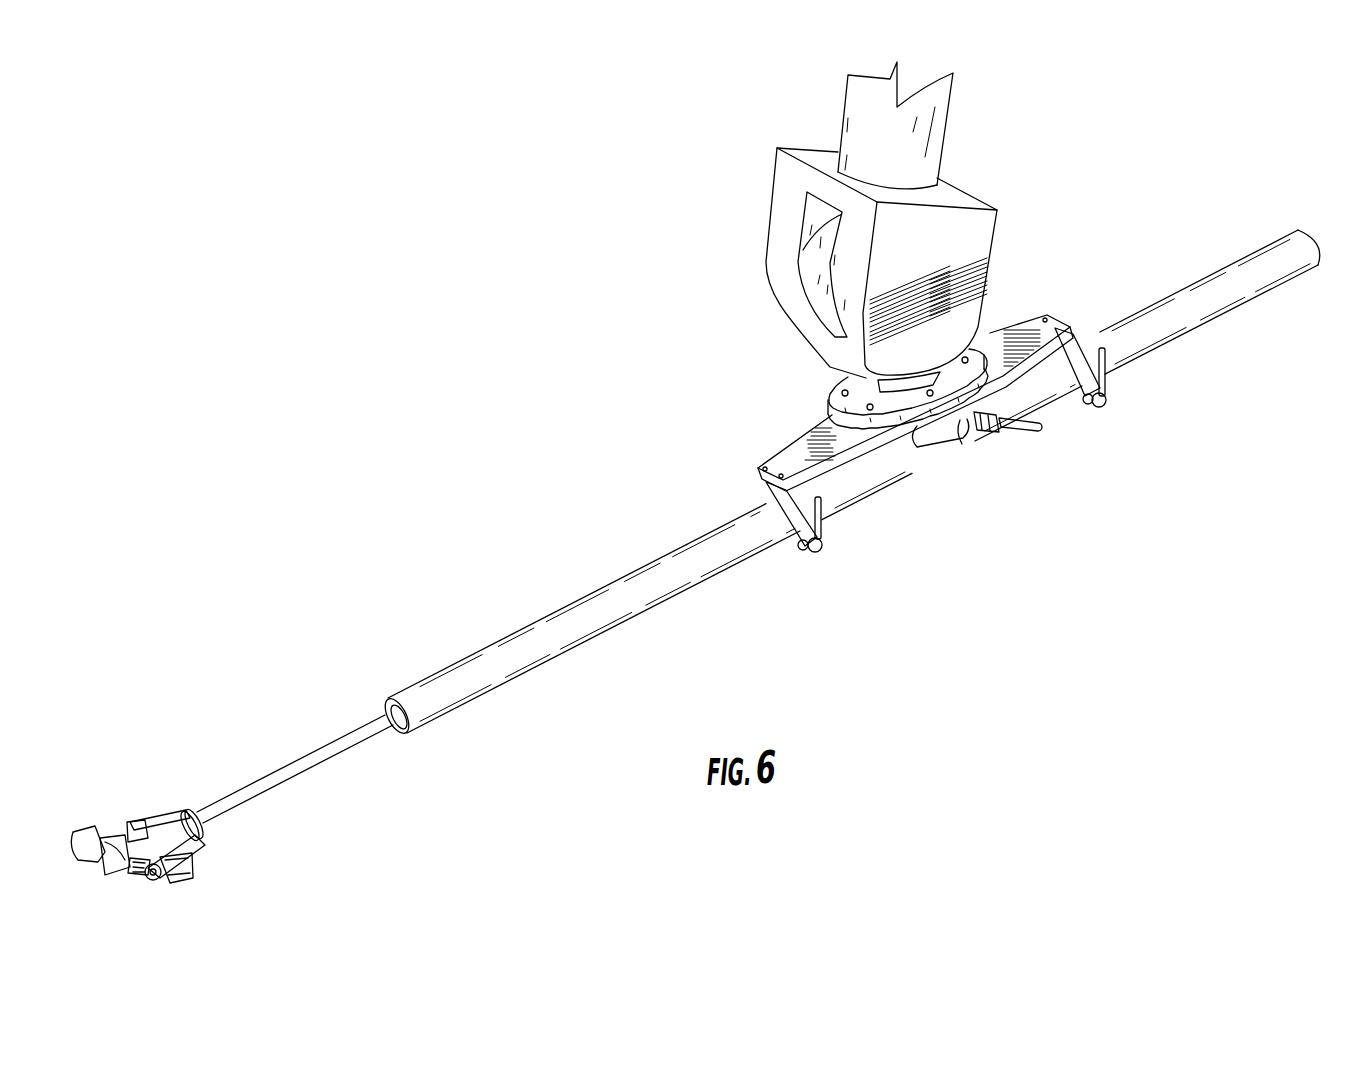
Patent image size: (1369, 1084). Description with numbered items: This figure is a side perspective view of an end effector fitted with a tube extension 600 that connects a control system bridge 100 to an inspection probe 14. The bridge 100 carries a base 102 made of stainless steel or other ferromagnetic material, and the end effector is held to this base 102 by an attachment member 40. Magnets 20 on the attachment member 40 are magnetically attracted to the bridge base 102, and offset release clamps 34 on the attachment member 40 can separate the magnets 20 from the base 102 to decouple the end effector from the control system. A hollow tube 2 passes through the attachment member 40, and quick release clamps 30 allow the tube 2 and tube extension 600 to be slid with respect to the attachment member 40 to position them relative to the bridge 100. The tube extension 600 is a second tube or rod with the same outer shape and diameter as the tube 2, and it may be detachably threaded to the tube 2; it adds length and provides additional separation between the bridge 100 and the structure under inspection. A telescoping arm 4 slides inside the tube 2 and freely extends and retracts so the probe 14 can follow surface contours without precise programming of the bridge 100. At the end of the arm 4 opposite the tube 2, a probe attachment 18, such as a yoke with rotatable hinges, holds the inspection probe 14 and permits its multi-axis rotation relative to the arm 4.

The tube 2 is at (715, 545).
The telescoping arm 4 is at (313, 757).
The inspection probe 14 is at (120, 875).
The probe attachment 18 is at (198, 840).
The magnets 20 is at (947, 435).
The quick release clamps 30 is at (817, 552).
The offset release clamps 34 is at (1038, 420).
The attachment member 40 is at (787, 463).
The bridge 100 is at (790, 176).
The base 102 is at (835, 396).
The tube extension 600 is at (960, 413).